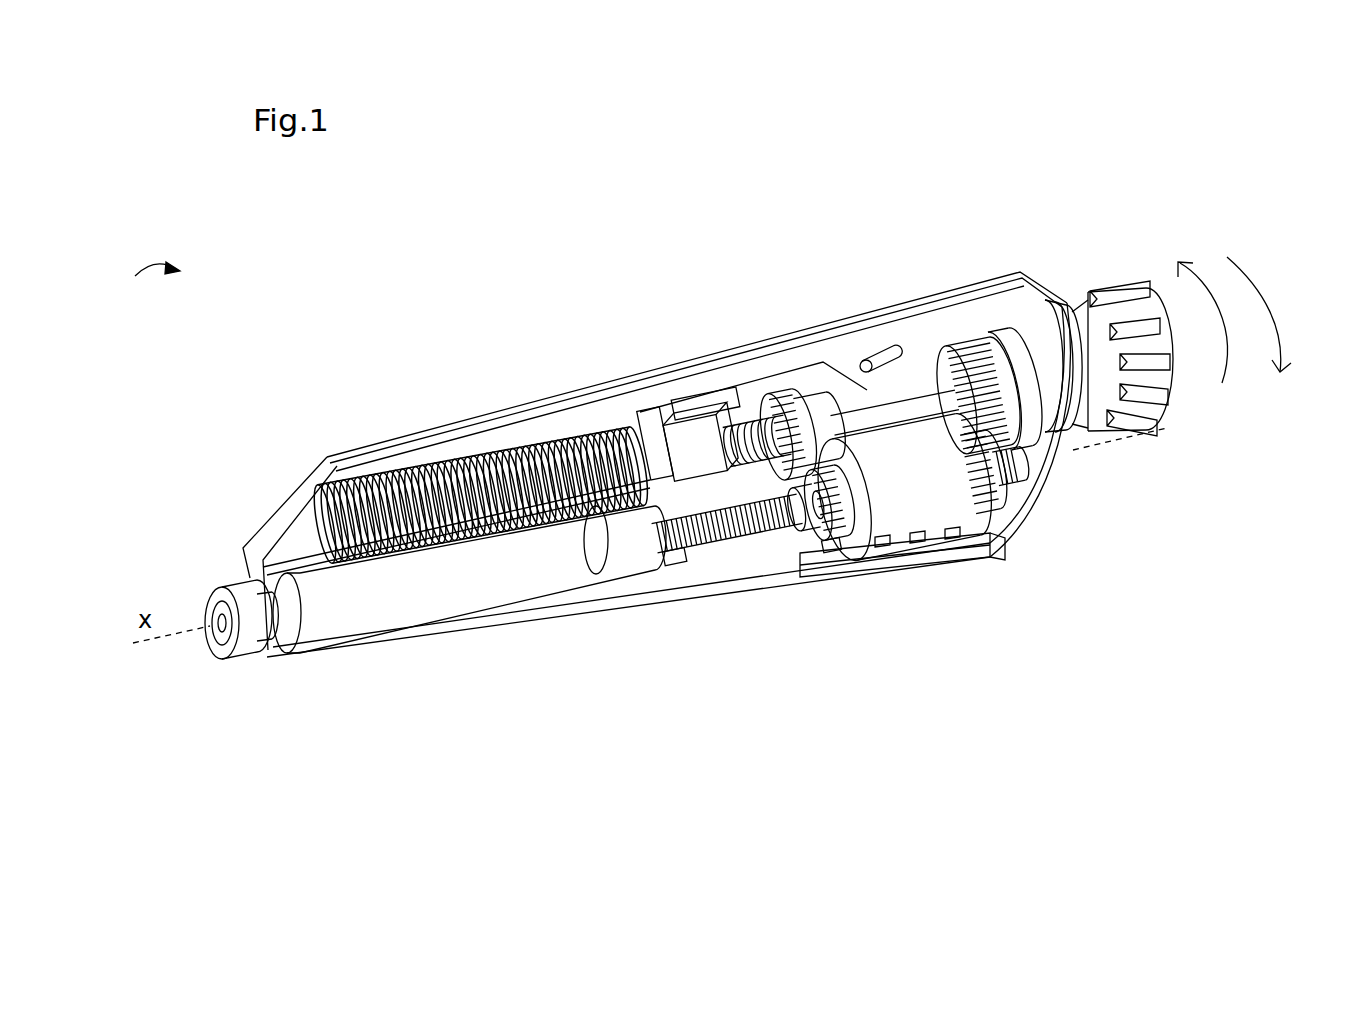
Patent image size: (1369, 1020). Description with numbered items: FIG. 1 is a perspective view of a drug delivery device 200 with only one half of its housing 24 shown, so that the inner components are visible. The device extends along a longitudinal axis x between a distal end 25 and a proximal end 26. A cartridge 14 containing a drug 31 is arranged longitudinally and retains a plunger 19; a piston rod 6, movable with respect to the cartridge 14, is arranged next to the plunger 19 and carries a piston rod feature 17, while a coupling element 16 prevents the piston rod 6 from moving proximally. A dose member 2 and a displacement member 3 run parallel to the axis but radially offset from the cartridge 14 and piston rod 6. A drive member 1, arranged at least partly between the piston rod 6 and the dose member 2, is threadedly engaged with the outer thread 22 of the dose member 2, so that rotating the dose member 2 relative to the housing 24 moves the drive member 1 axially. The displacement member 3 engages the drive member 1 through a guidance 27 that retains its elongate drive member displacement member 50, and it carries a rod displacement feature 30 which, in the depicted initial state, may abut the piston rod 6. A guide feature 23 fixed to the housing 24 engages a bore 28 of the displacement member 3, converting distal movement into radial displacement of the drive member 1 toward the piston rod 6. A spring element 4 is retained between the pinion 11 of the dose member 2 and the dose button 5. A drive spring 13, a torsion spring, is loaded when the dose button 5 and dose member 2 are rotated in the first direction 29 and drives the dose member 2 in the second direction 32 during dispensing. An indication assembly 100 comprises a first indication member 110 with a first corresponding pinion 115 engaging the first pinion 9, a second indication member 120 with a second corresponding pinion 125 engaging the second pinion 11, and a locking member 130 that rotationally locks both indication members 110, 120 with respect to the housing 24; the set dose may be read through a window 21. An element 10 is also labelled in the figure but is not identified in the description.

The drive member 1 is at (702, 428).
The dose member 2 is at (903, 407).
The displacement member 3 is at (988, 318).
The spring element 4 is at (1013, 332).
The dose button 5 is at (1117, 307).
The piston rod 6 is at (710, 540).
The first pinion 9 is at (815, 390).
The dose indicator drum 10 is at (973, 537).
The second pinion 11 is at (977, 375).
The drive spring 13 is at (493, 447).
The cartridge 14 is at (330, 640).
The coupling element 16 is at (667, 563).
The piston rod feature 17 is at (757, 520).
The plunger 19 is at (602, 568).
The window 21 is at (973, 553).
The outer thread 22 is at (722, 420).
The guide feature 23 is at (865, 367).
The housing 24 is at (315, 460).
The distal end 25 is at (360, 553).
The proximal end 26 is at (1214, 369).
The guidance 27 is at (662, 407).
The bore 28 is at (893, 352).
The first direction 29 is at (1202, 322).
The rod displacement feature 30 is at (1047, 450).
The drug 31 is at (387, 600).
The second direction 32 is at (1259, 314).
The drive member displacement member 50 is at (742, 405).
The indication assembly 100 is at (917, 540).
The first indication member 110 is at (883, 540).
The first corresponding pinion 115 is at (817, 537).
The second indication member 120 is at (953, 537).
The second corresponding pinion 125 is at (993, 490).
The locking member 130 is at (828, 573).
The drug delivery device 200 is at (154, 252).